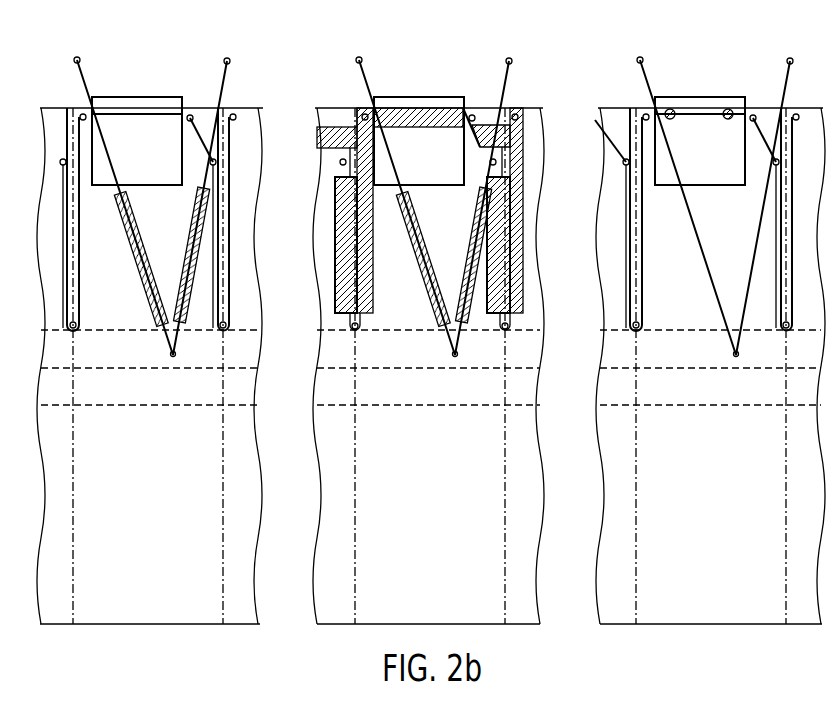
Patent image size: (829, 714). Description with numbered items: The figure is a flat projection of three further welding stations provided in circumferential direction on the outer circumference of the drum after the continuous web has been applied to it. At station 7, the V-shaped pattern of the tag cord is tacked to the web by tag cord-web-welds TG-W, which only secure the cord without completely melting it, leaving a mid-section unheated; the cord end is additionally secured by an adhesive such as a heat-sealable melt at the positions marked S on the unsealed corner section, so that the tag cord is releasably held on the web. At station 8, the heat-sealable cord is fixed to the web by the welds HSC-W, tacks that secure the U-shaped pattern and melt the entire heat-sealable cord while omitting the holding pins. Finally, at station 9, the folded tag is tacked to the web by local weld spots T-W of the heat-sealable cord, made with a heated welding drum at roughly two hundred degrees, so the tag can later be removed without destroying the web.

The station 7 is at (150, 321).
The station 8 is at (427, 321).
The station 9 is at (710, 321).
The adhesive securing positions S is at (212, 116).
The tag cord-web-welds TG-W is at (183, 262).
The heat-sealable cord welds HSC-W is at (330, 128).
The tag welds T-W is at (716, 108).